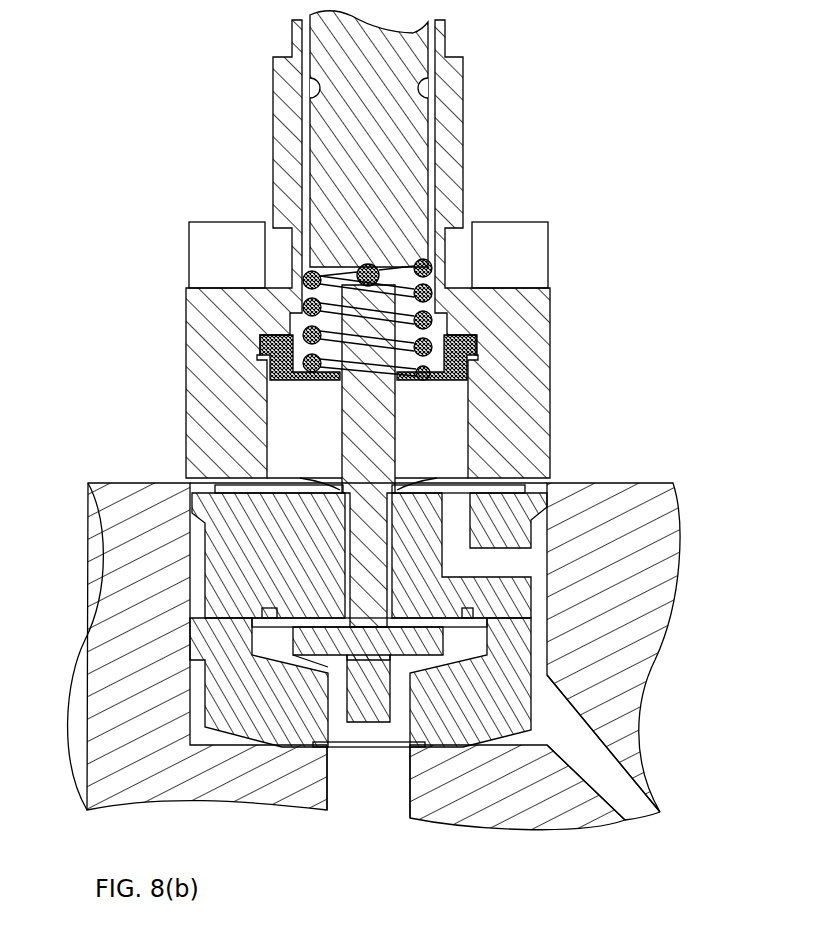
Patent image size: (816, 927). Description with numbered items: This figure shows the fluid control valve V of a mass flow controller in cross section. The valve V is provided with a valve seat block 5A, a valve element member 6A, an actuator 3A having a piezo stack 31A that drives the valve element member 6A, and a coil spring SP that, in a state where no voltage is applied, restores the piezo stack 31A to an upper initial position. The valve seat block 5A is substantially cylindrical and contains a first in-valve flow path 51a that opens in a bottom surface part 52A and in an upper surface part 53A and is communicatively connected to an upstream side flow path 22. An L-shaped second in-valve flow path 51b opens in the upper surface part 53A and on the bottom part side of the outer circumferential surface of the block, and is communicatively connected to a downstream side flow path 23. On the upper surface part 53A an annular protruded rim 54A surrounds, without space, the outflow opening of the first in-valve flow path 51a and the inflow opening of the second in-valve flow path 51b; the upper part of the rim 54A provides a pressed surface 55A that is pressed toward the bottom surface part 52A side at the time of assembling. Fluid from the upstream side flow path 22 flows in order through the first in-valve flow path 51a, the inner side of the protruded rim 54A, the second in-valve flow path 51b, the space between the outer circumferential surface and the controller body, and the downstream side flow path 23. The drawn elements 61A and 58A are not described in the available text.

The actuator 3A is at (267, 137).
The piezo stack 31A is at (306, 168).
The fluid control valve V is at (563, 192).
The coil spring SP is at (305, 304).
The pressed surface 55A is at (205, 480).
The upper surface part 53A is at (370, 476).
The protruded rim 54A is at (530, 488).
The valve seat block 5A is at (185, 572).
The first in-valve flow path 51a is at (347, 523).
The valve element 61A is at (316, 657).
The second in-valve flow path 51b is at (457, 558).
The bottom surface part 52A is at (370, 722).
The clearance 58A is at (338, 625).
The valve element member 6A is at (372, 724).
The upstream side flow path 22 is at (412, 788).
The downstream side flow path 23 is at (617, 778).